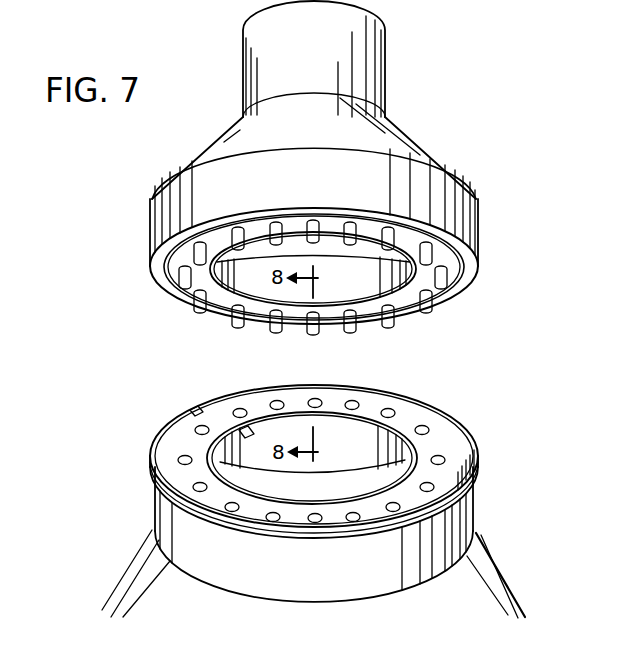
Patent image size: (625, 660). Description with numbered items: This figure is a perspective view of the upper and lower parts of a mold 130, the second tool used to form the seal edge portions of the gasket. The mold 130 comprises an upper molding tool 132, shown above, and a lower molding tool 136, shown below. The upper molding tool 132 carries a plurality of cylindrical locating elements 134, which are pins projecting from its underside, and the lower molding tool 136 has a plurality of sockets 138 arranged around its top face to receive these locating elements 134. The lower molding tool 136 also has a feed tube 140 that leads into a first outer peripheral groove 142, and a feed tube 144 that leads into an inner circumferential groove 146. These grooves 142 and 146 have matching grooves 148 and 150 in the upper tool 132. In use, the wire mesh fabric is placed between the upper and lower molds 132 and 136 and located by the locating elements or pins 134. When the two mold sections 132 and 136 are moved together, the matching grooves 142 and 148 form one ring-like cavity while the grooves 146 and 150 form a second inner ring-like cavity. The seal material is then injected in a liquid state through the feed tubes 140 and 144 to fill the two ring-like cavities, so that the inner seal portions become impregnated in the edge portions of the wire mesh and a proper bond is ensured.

The mold 130 is at (298, 177).
The upper molding tool 132 is at (413, 158).
The cylindrical locating elements 134 is at (430, 302).
The lower molding tool 136 is at (324, 492).
The sockets 138 is at (393, 412).
The feed tube 140 is at (188, 405).
The first outer peripheral groove 142 is at (464, 446).
The feed tube 144 is at (244, 424).
The inner circumferential groove 146 is at (432, 446).
The matching groove 148 is at (455, 248).
The matching groove 150 is at (402, 312).